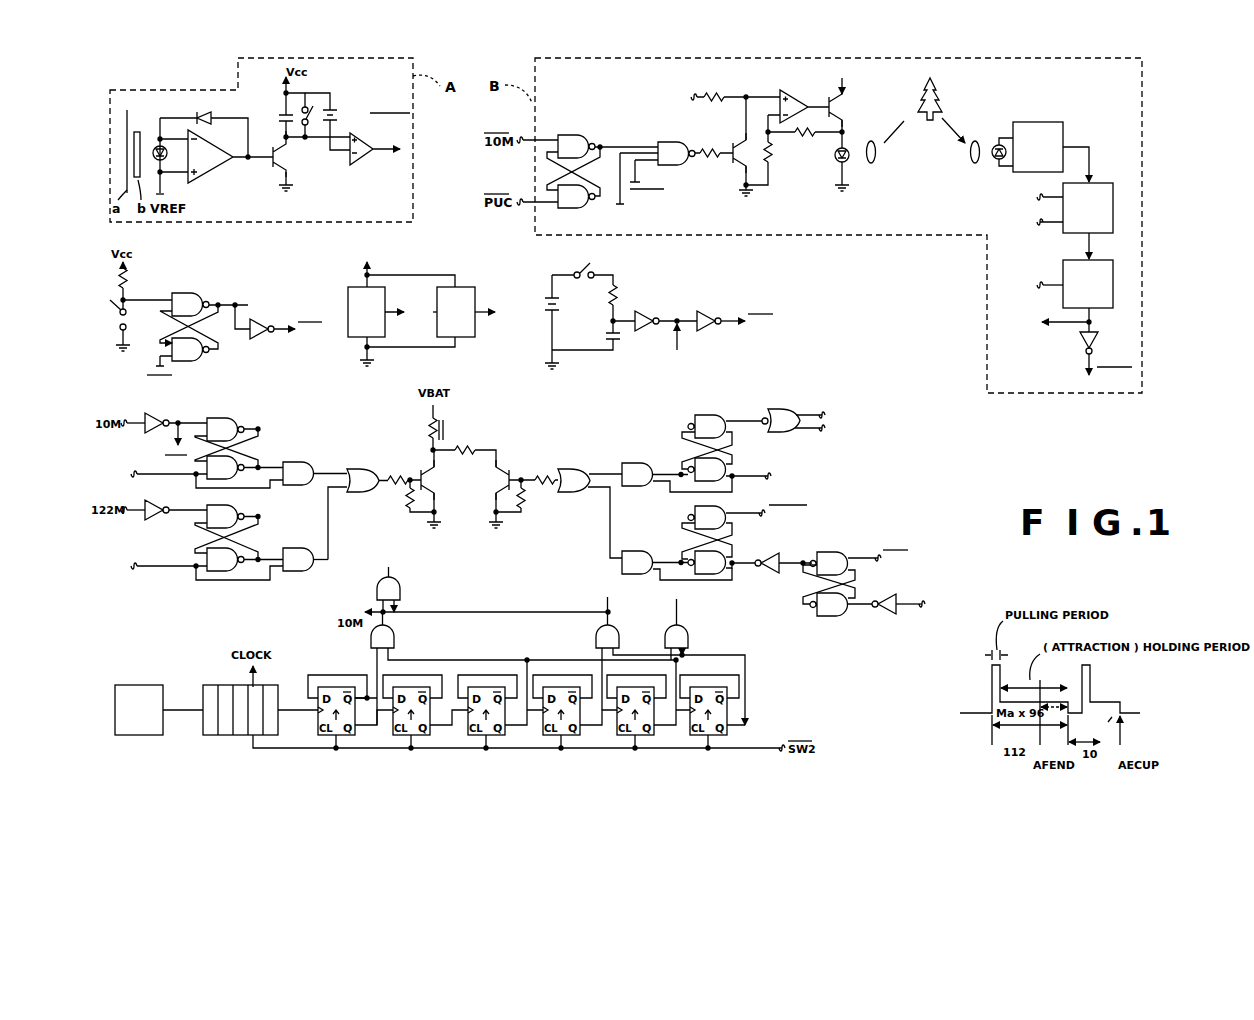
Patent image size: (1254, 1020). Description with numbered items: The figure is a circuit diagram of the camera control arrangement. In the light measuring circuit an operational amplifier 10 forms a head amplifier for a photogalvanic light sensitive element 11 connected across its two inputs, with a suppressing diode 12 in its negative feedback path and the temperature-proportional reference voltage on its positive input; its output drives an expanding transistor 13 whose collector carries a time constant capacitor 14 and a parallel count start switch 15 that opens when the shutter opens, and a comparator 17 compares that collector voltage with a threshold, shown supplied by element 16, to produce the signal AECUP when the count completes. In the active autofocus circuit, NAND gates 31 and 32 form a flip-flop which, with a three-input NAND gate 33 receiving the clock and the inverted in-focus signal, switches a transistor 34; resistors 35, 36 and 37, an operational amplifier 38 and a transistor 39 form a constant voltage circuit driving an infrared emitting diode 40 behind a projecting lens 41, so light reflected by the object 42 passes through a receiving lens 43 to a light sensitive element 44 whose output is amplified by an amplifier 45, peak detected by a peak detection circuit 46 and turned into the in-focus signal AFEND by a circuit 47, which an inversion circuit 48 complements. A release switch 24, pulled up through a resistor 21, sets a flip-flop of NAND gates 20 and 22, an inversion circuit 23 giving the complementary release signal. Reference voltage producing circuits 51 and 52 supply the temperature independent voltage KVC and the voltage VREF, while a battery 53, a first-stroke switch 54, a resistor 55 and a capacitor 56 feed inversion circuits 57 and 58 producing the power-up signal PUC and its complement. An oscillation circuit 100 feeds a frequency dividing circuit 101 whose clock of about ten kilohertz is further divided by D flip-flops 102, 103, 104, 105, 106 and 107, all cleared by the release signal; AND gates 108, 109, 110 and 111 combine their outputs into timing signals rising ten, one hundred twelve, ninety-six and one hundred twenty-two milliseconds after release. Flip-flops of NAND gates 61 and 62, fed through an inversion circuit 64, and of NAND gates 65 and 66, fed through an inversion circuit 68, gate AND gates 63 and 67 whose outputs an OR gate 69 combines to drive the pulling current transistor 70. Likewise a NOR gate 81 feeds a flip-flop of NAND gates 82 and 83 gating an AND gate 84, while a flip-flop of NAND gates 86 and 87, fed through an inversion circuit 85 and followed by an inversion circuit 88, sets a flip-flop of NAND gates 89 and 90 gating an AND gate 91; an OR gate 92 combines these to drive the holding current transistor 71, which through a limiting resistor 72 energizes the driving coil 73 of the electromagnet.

The operational amplifier 10 is at (213, 178).
The photogalvanic type light sensitive element 11 is at (157, 146).
The suppressing diode 12 is at (220, 118).
The expanding transistor 13 is at (279, 168).
The time constant capacitor 14 is at (279, 117).
The count start switch 15 is at (307, 128).
The battery 16 is at (337, 102).
The comparator 17 is at (362, 158).
The NAND gate 20 is at (195, 293).
The resistor 21 is at (128, 281).
The NAND gate 22 is at (190, 362).
The inversion circuit 23 is at (260, 339).
The SW2 switch 24 is at (128, 321).
The two-input NAND gate 31 is at (585, 135).
The two-input NAND gate 32 is at (576, 208).
The three-input NAND gate 33 is at (672, 142).
The switching transistor 34 is at (727, 165).
The resistor 35 is at (774, 162).
The resistor 36 is at (805, 136).
The resistor 37 is at (720, 94).
The OP amplifier 38 is at (797, 92).
The transistor 39 is at (862, 90).
The infrared ray emitting diode 40 is at (847, 162).
The light projecting lens 41 is at (875, 164).
The object to be photographed 42 is at (947, 104).
The light receiving lens 43 is at (970, 164).
The photogalvanic type light sensitive element 44 is at (996, 160).
The amplifier 45 is at (1050, 120).
The peak detection circuit 46 is at (1100, 182).
The in-focus signal producing circuit 47 is at (1062, 262).
The inversion circuit 48 is at (1079, 345).
The reference voltage producing circuit 51 is at (348, 322).
The reference voltage producing circuit 52 is at (475, 325).
The power source battery 53 is at (562, 307).
The switch SW1 54 is at (585, 280).
The resistor 55 is at (618, 295).
The capacitor 56 is at (617, 342).
The inversion circuit 57 is at (650, 310).
The inversion circuit 58 is at (708, 310).
The NAND gate 61 is at (235, 418).
The NAND gate 62 is at (210, 481).
The two-input AND gate 63 is at (294, 462).
The inversion circuit 64 is at (157, 433).
The NAND gate 65 is at (245, 508).
The NAND gate 66 is at (224, 572).
The two-input AND gate 67 is at (297, 572).
The inversion circuit 68 is at (156, 522).
The two-input OR gate 69 is at (360, 469).
The PULL current driving transistor 70 is at (417, 473).
The HOLD current driving transistor 71 is at (512, 473).
The resistor 72 is at (465, 455).
The driving coil of electromagnet 73 is at (447, 433).
The NOR gate 81 is at (782, 409).
The NAND gate 82 is at (707, 415).
The NAND gate 83 is at (735, 464).
The two-input AND gate 84 is at (633, 463).
The inversion circuit 85 is at (886, 616).
The NAND gate 86 is at (835, 617).
The NAND gate 87 is at (832, 552).
The inversion circuit 88 is at (768, 575).
The NAND gate 89 is at (728, 506).
The NAND gate 90 is at (708, 574).
The two-input AND gate 91 is at (637, 551).
The two-input OR gate 92 is at (575, 469).
The oscillation circuit 100 is at (135, 735).
The frequency dividing circuit 101 is at (232, 735).
The D flip-flop circuit 102 is at (325, 735).
The D flip-flop circuit 103 is at (400, 735).
The D flip-flop circuit 104 is at (475, 735).
The D flip-flop circuit 105 is at (550, 735).
The D flip-flop circuit 106 is at (625, 735).
The D flip-flop circuit 107 is at (700, 735).
The AND gate 108 is at (395, 642).
The AND gate 109 is at (596, 642).
The AND gate 110 is at (690, 642).
The AND gate 111 is at (402, 591).